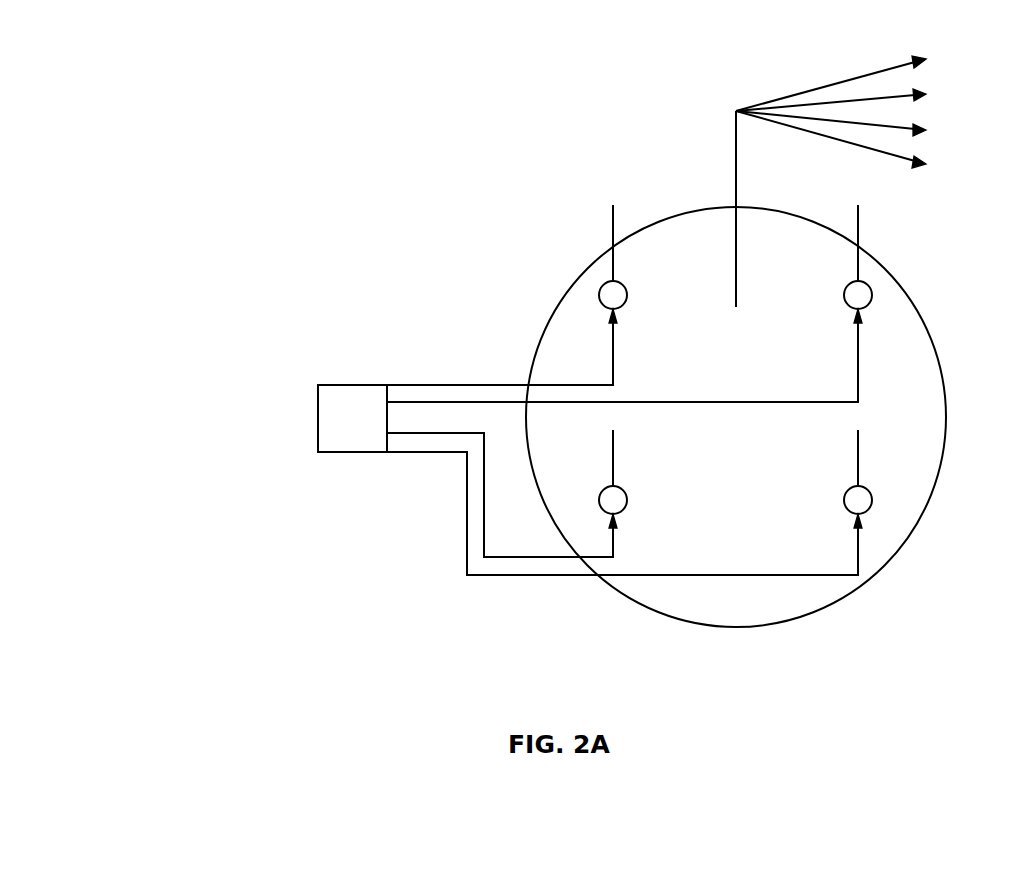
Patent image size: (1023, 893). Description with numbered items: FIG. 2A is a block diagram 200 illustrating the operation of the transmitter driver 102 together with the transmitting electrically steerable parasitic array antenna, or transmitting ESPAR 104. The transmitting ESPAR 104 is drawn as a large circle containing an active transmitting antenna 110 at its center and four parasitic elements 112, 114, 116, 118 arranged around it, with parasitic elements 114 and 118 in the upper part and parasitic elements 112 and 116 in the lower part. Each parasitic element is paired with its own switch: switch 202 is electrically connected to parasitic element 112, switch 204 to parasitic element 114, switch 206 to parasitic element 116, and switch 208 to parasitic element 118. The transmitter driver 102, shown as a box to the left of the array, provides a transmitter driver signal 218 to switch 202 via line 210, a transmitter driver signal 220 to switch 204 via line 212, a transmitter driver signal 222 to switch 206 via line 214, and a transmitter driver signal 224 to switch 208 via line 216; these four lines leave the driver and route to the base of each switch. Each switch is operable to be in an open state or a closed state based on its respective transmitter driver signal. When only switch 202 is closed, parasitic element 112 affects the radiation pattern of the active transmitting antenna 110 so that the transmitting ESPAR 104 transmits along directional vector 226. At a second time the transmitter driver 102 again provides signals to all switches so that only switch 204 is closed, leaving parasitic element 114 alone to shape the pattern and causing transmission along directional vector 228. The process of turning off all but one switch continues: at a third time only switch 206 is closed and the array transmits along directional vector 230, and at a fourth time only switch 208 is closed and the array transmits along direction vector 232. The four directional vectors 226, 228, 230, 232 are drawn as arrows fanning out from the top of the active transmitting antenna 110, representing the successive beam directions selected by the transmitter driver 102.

The transmitting system 200 is at (272, 72).
The transmitter driver 102 is at (265, 418).
The transmitting electrically steerable parasitic array antenna (ESPAR) 104 is at (736, 453).
The active transmitting antenna 110 is at (722, 170).
The parasitic element 112 is at (629, 444).
The parasitic element 114 is at (600, 228).
The parasitic element 116 is at (843, 444).
The parasitic element 118 is at (873, 228).
The switch 202 is at (640, 501).
The switch 204 is at (640, 296).
The switch 206 is at (830, 501).
The switch 208 is at (830, 296).
The line 210 is at (405, 447).
The line 212 is at (441, 372).
The line 214 is at (450, 467).
The line 216 is at (405, 390).
The transmitter driver signal 218 is at (629, 541).
The transmitter driver signal 220 is at (629, 346).
The transmitter driver signal 222 is at (843, 541).
The transmitter driver signal 224 is at (843, 346).
The directional vector 226 is at (855, 76).
The directional vector 228 is at (855, 94).
The directional vector 230 is at (855, 127).
The direction vector 232 is at (855, 144).